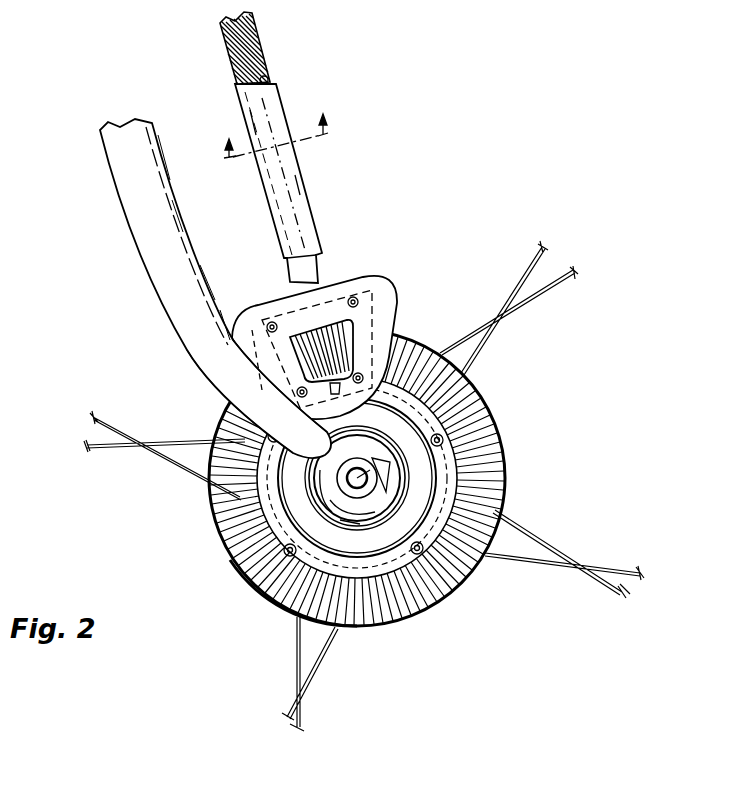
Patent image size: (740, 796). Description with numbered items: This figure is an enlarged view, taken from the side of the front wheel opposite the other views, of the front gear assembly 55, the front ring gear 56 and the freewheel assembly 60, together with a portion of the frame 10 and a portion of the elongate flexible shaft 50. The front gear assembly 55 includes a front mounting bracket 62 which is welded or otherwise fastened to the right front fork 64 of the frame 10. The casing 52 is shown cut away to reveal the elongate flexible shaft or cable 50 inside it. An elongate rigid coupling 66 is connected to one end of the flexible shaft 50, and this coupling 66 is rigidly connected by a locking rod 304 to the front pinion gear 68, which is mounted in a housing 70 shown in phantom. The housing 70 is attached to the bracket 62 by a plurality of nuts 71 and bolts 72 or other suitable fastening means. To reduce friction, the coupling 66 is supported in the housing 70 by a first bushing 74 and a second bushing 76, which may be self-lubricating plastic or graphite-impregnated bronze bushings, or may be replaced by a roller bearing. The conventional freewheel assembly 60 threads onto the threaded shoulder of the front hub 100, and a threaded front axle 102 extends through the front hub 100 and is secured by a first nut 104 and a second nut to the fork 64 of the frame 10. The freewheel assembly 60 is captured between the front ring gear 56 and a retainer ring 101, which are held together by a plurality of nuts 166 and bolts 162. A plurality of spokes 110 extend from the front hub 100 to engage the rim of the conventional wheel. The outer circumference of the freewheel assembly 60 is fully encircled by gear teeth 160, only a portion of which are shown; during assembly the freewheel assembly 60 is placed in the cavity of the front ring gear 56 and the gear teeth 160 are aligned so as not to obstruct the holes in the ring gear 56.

The frame 10 is at (275, 142).
The elongate flexible shaft 50 is at (253, 40).
The casing 52 is at (262, 98).
The front gear assembly 55 is at (395, 288).
The front ring gear 56 is at (490, 427).
The freewheel assembly 60 is at (487, 562).
The front mounting bracket 62 is at (250, 338).
The right front fork 64 is at (152, 238).
The elongate rigid coupling 66 is at (337, 277).
The front pinion gear 68 is at (245, 365).
The housing 70 is at (355, 338).
The nuts 71 is at (277, 314).
The bolts 72 is at (262, 326).
The first bushing 74 is at (337, 300).
The second bushing 76 is at (470, 395).
The front hub 100 is at (300, 556).
The retainer ring 101 is at (293, 610).
The front axle 102 is at (325, 497).
The first nut 104 is at (412, 466).
The spokes 110 is at (537, 298).
The gear teeth 160 is at (470, 500).
The bolts 162 is at (265, 450).
The nuts 166 is at (178, 460).
The locking rod 304 is at (366, 323).